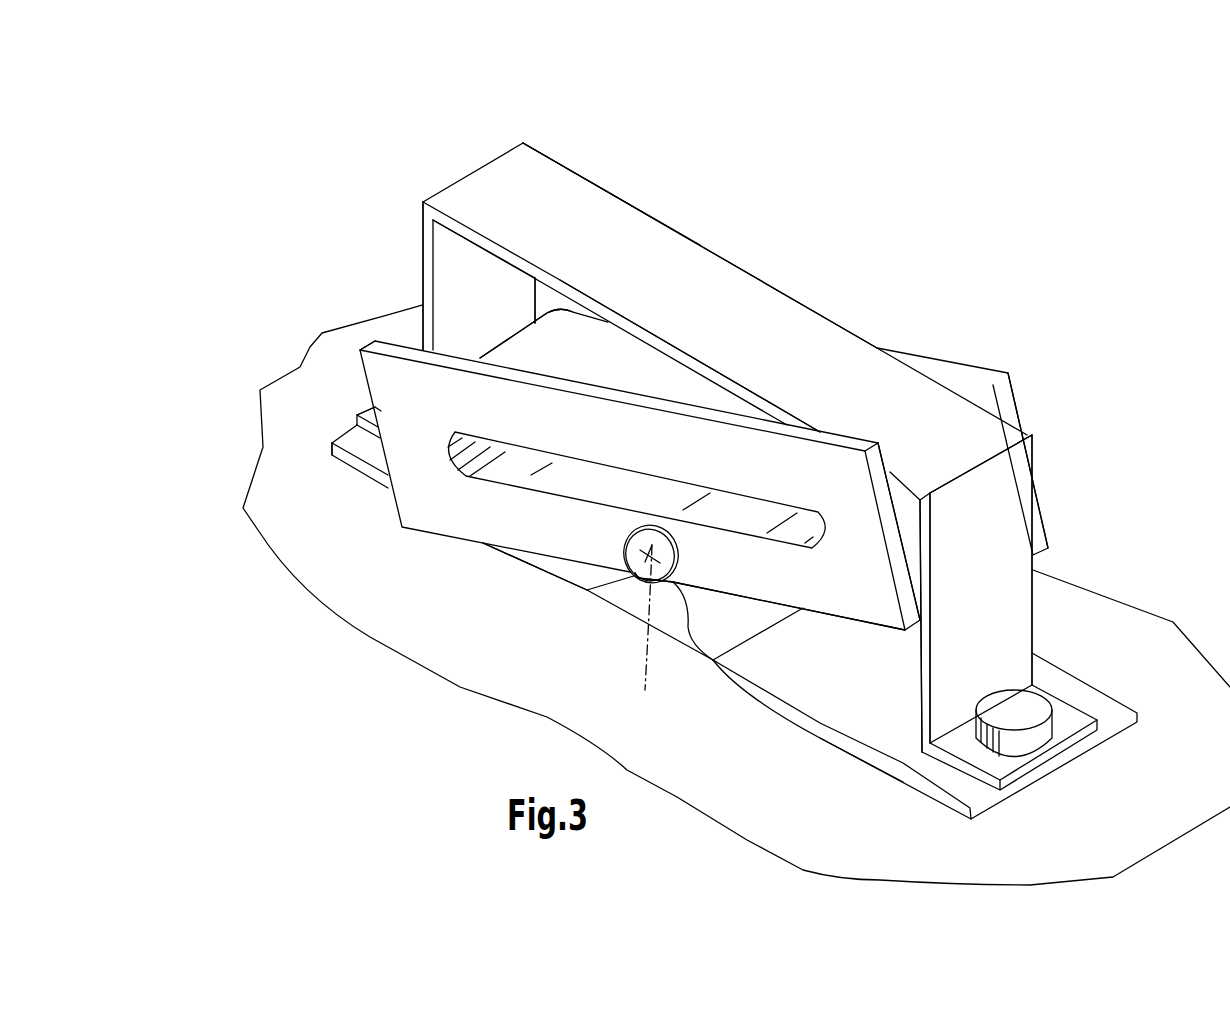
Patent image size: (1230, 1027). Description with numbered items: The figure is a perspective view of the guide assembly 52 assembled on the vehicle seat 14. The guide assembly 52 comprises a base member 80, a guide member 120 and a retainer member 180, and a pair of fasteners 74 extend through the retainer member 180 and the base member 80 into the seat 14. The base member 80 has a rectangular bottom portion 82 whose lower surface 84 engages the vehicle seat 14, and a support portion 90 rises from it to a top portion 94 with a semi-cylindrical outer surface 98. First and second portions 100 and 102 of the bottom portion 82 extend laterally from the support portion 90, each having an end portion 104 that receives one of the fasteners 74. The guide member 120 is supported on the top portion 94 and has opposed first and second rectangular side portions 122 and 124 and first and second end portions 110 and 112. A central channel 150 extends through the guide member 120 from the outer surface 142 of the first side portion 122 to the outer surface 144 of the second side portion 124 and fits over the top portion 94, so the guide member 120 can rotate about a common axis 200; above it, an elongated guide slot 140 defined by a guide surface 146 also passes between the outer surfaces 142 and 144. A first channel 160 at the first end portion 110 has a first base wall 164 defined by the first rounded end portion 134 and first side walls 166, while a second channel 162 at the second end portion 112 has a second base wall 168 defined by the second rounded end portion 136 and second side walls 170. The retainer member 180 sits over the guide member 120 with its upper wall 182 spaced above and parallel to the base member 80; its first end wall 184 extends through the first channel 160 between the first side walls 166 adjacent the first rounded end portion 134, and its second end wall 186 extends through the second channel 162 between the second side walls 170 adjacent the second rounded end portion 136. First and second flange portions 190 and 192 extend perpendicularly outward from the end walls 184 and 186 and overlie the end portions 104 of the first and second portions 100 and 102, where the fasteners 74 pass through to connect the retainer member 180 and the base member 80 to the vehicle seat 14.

The vehicle seat 14 is at (288, 413).
The guide assembly 52 is at (417, 173).
The fasteners 74 is at (1020, 710).
The base member 80 is at (647, 607).
The bottom portion 82 is at (557, 580).
The lower surface 84 is at (512, 562).
The support portion 90 is at (627, 590).
The top portion 94 is at (672, 568).
The semi-cylindrical outer surface 98 is at (685, 620).
The first portion 100 is at (840, 737).
The second portion 102 is at (372, 477).
The end portion 104 is at (350, 460).
The first end portion 110 is at (1003, 390).
The second end portion 112 is at (385, 367).
The guide member 120 is at (830, 420).
The first side portion 122 is at (572, 420).
The second side portion 124 is at (970, 388).
The first rounded end portion 134 is at (910, 497).
The second rounded end portion 136 is at (510, 332).
The guide slot 140 is at (500, 480).
The outer surface 142 is at (790, 570).
The outer surface 144 is at (940, 357).
The guide surface 146 is at (714, 475).
The central channel 150 is at (622, 536).
The first channel 160 is at (907, 522).
The second channel 162 is at (407, 330).
The first base wall 164 is at (922, 508).
The first side walls 166 is at (905, 590).
The second base wall 168 is at (500, 343).
The second side walls 170 is at (413, 350).
The retainer member 180 is at (697, 307).
The upper wall 182 is at (605, 225).
The first end wall 184 is at (997, 593).
The second end wall 186 is at (458, 270).
The first flange portion 190 is at (997, 763).
The second flange portion 192 is at (357, 420).
The common axis 200 is at (646, 637).